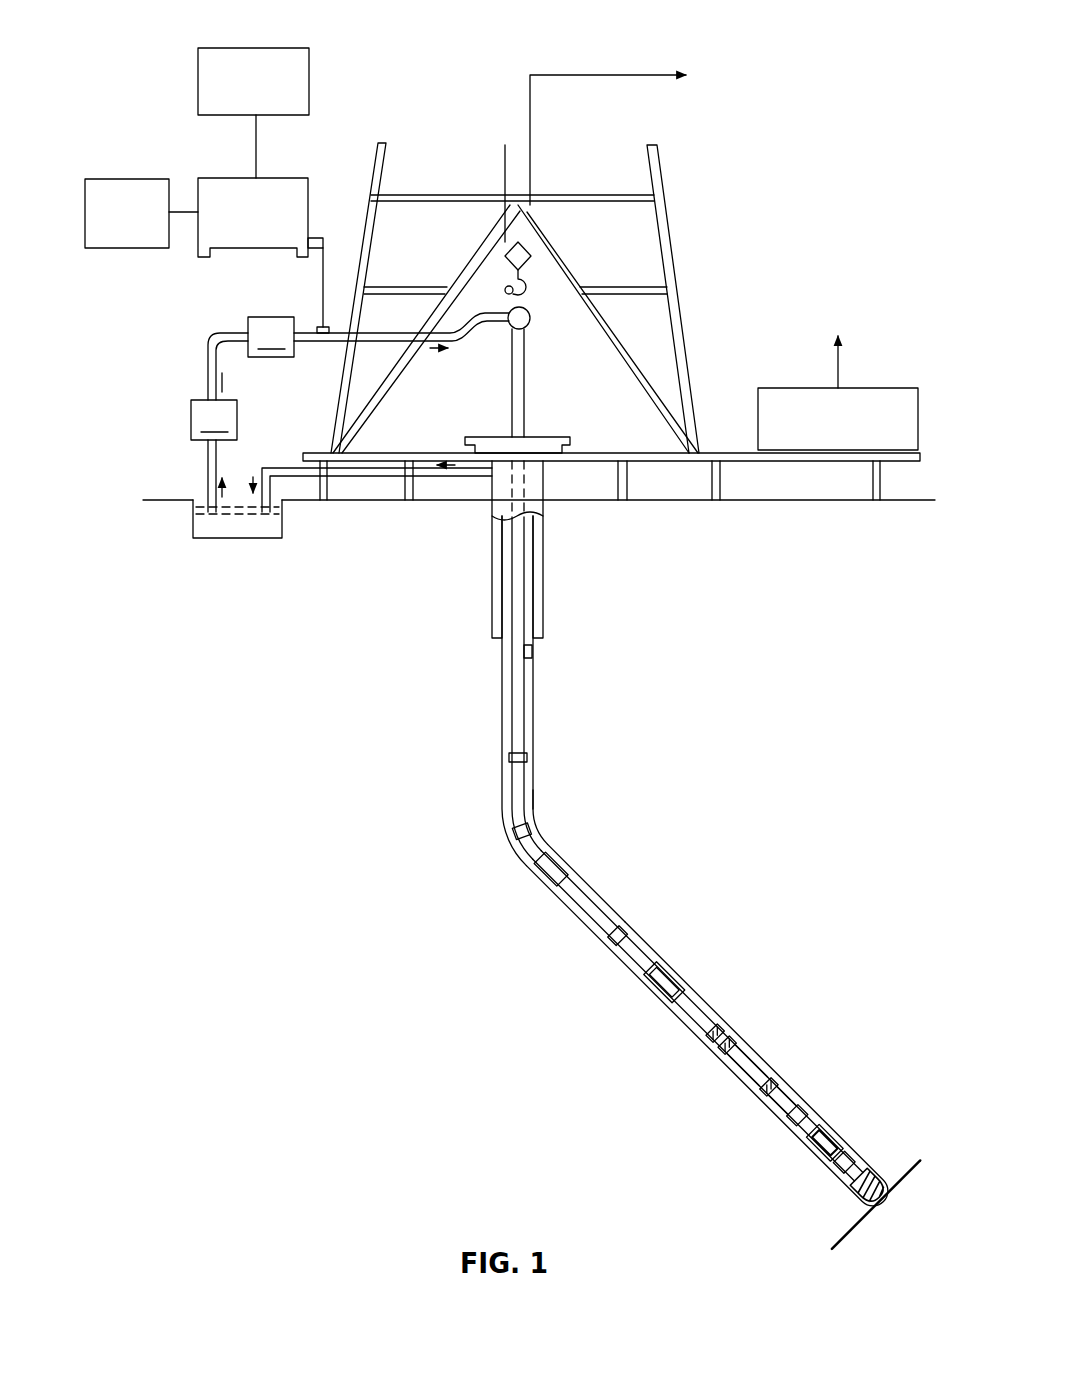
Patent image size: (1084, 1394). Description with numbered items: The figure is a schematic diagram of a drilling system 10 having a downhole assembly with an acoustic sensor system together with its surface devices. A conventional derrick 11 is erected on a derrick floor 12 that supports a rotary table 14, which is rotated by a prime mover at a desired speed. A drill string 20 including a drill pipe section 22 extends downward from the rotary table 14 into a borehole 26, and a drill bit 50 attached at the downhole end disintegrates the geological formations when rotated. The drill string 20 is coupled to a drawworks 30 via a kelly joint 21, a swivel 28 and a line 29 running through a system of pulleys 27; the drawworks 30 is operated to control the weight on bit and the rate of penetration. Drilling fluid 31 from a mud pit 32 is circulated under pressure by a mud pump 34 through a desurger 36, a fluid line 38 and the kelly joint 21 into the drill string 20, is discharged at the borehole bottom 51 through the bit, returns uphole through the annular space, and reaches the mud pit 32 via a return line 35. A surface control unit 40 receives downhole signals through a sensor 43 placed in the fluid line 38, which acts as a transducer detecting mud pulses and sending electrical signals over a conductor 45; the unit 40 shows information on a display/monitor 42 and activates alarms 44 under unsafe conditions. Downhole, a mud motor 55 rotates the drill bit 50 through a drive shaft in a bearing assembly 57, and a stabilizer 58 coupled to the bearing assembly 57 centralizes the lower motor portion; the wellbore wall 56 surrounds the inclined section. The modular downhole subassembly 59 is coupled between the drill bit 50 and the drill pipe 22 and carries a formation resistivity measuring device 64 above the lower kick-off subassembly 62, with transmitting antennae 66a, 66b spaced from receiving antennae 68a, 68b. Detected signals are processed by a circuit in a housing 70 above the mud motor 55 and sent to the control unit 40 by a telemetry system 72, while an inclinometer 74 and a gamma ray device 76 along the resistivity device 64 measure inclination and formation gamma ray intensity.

The drilling system 10 is at (779, 46).
The derrick 11 is at (682, 298).
The derrick floor 12 is at (712, 453).
The rotary table 14 is at (539, 437).
The drill string 20 is at (533, 658).
The kelly joint 21 is at (527, 366).
The drill pipe section 22 is at (511, 714).
The borehole 26 is at (538, 822).
The system of pulleys 27 is at (553, 852).
The swivel 28 is at (513, 323).
The line 29 is at (530, 168).
The drawworks 30 is at (895, 388).
The drilling fluid 31 is at (200, 517).
The mud pit 32 is at (267, 545).
The mud pump 34 is at (214, 420).
The return line 35 is at (358, 478).
The desurger 36 is at (271, 337).
The fluid line 38 is at (325, 335).
The surface control unit 40 is at (233, 178).
The display/monitor 42 is at (228, 47).
The sensor 43 is at (326, 327).
The alarms 44 is at (134, 178).
The conductor 45 is at (317, 238).
The drill bit 50 is at (884, 1170).
The borehole bottom 51 is at (833, 1238).
The mud motor 55 is at (612, 897).
The wellbore wall 56 is at (650, 935).
The bearing assembly 57 is at (808, 1153).
The stabilizer 58 is at (840, 1137).
The downhole subassembly 59 is at (692, 826).
The lower kick-off subassembly 62 is at (834, 1116).
The formation resistivity measuring device 64 is at (750, 1073).
The transmitting antenna 66a is at (680, 1000).
The transmitting antenna 66b is at (775, 1088).
The receiving antenna 68a is at (727, 1050).
The receiving antenna 68b is at (729, 1033).
The housing 70 is at (553, 867).
The telemetry system 72 is at (518, 786).
The inclinometer 74 is at (759, 1079).
The gamma ray device 76 is at (814, 1096).